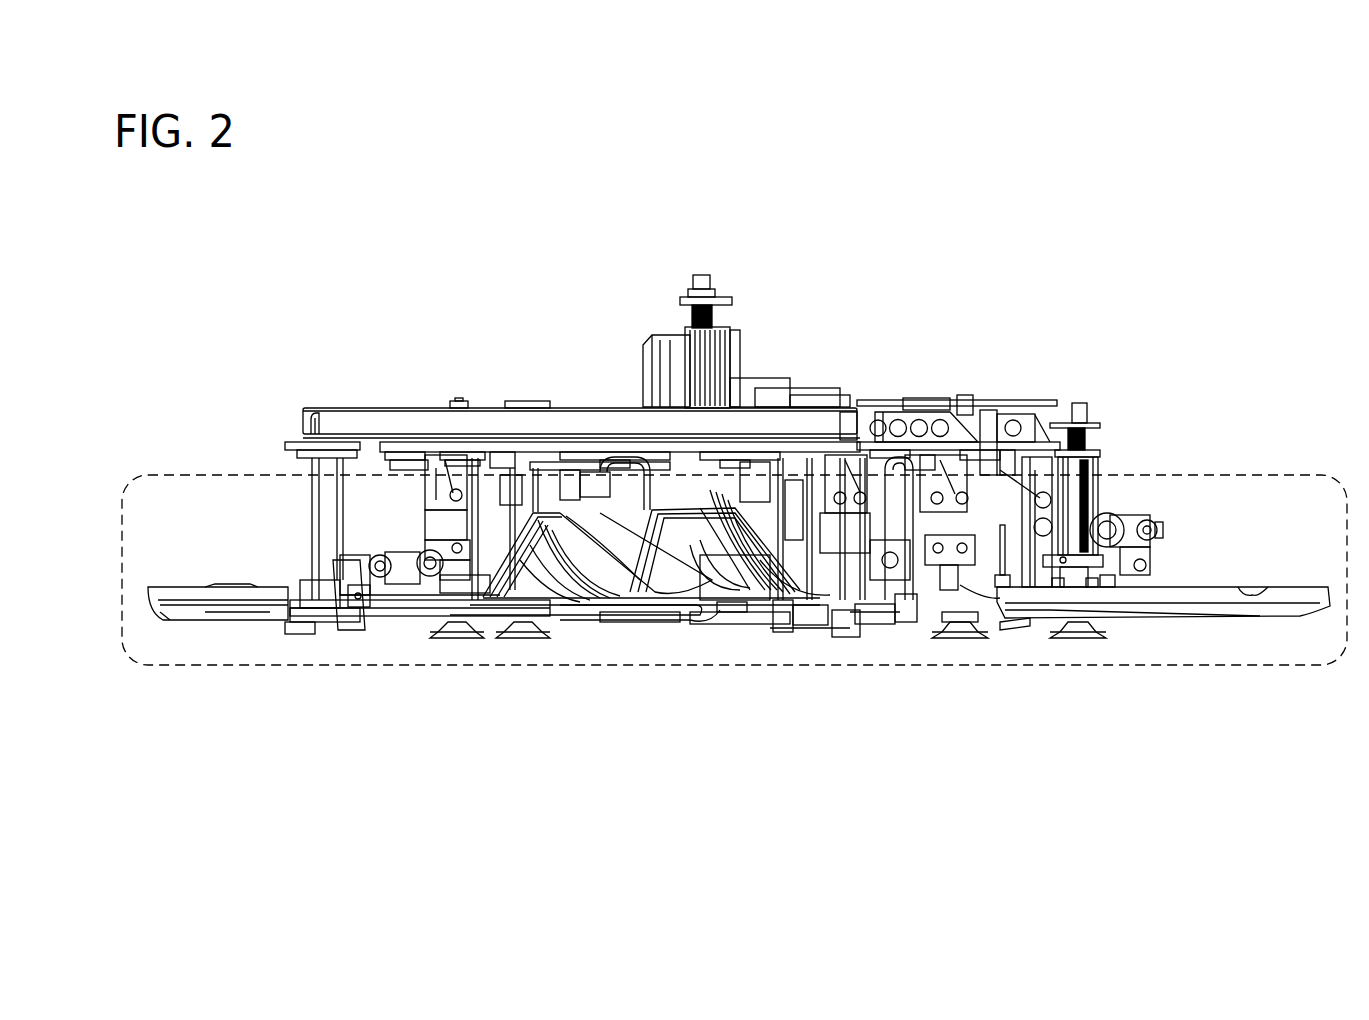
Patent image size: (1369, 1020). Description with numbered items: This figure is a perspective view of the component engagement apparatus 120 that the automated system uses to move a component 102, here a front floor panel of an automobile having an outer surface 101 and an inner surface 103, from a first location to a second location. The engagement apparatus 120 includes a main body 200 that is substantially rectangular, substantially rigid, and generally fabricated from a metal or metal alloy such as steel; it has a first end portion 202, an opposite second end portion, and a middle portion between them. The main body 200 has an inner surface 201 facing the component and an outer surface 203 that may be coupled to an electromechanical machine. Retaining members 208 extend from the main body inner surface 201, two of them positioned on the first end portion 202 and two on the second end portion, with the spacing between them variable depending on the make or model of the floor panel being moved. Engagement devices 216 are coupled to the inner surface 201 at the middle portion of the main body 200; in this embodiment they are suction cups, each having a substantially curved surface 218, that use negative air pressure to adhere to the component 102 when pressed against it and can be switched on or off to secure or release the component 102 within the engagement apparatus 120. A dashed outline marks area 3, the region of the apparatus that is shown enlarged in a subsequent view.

The area 3 is at (1235, 475).
The outer surface 101 is at (738, 500).
The component 102 is at (700, 635).
The inner surface 103 is at (650, 625).
The component engagement apparatus 120 is at (1035, 362).
The main body 200 is at (567, 360).
The inner surface 201 is at (377, 400).
The first end portion 202 is at (288, 380).
The outer surface 203 is at (372, 462).
The retaining member 208 is at (897, 628).
The engagement device 216 is at (1032, 645).
The curved surface 218 is at (965, 655).